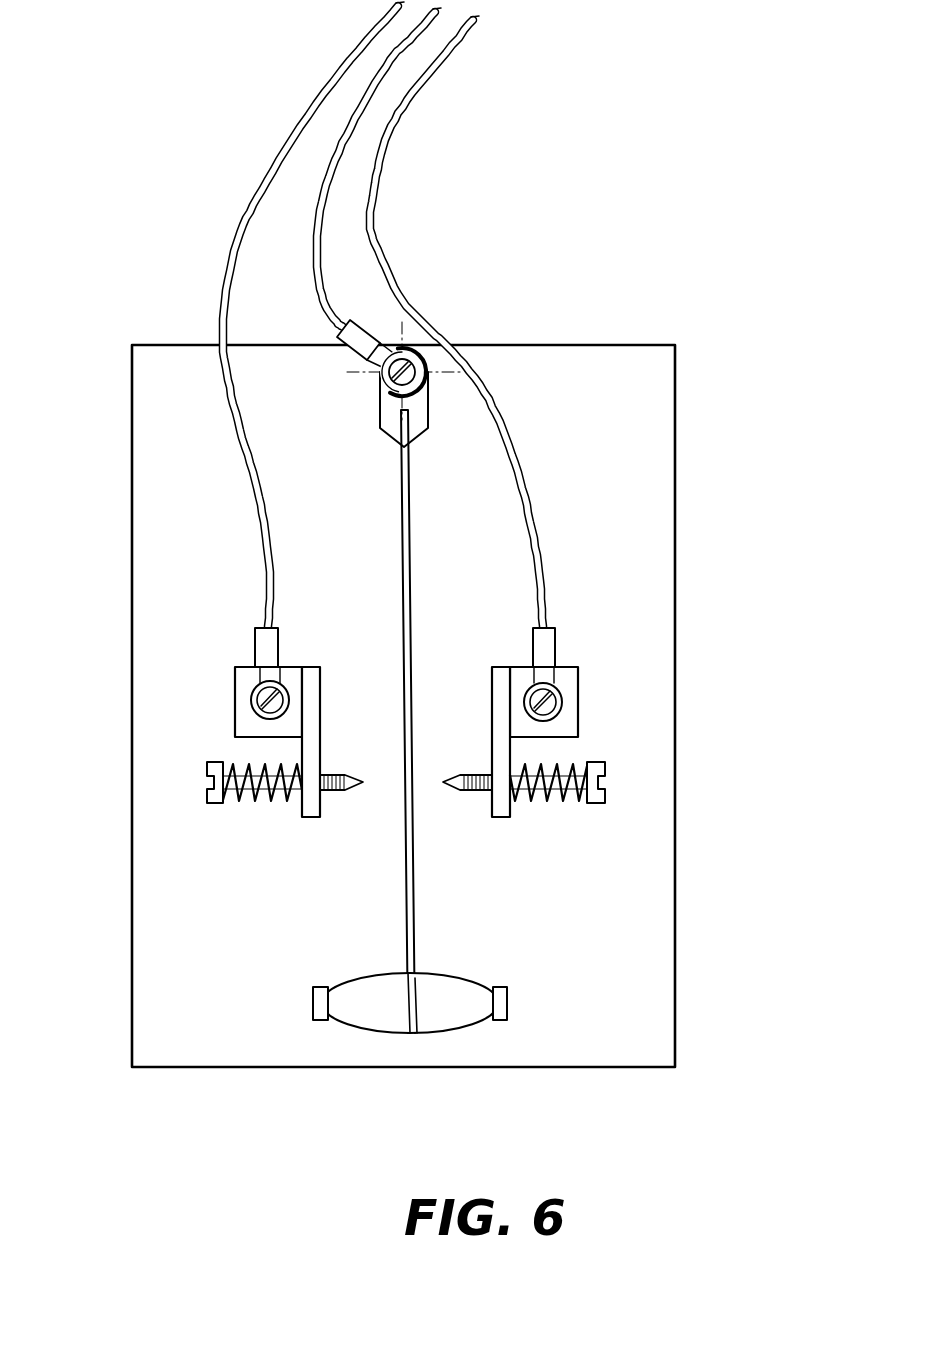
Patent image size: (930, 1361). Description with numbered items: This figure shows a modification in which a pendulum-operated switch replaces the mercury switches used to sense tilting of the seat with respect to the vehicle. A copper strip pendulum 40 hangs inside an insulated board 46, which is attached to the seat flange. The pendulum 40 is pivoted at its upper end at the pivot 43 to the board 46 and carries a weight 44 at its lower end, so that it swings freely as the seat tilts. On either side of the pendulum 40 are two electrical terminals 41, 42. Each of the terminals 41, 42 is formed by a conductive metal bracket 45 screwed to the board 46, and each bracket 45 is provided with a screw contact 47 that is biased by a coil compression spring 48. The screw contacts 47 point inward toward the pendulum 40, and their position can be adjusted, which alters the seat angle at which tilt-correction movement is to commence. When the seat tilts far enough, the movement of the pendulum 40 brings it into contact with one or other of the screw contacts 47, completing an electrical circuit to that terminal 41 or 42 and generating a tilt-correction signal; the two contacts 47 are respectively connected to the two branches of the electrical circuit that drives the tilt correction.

The copper strip pendulum 40 is at (405, 540).
The electrical terminal 41 is at (230, 810).
The electrical terminal 42 is at (597, 842).
The pivot 43 is at (406, 372).
The weight 44 is at (370, 1015).
The conductive metal bracket 45 is at (513, 665).
The insulated board 46 is at (163, 443).
The screw contact 47 is at (475, 792).
The coil compression spring 48 is at (553, 802).